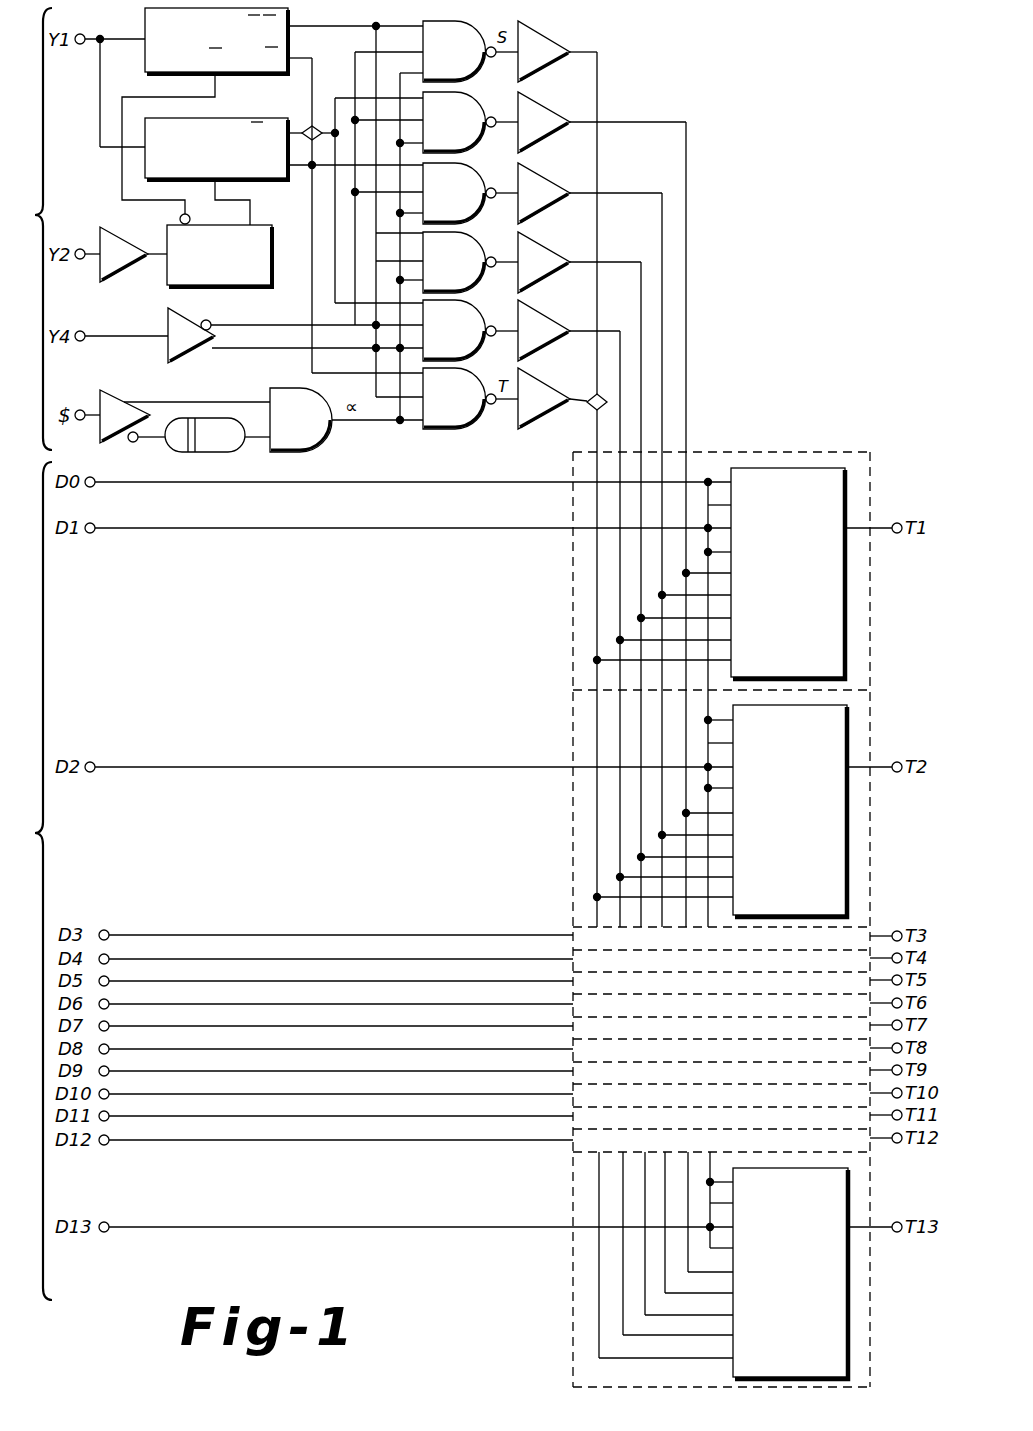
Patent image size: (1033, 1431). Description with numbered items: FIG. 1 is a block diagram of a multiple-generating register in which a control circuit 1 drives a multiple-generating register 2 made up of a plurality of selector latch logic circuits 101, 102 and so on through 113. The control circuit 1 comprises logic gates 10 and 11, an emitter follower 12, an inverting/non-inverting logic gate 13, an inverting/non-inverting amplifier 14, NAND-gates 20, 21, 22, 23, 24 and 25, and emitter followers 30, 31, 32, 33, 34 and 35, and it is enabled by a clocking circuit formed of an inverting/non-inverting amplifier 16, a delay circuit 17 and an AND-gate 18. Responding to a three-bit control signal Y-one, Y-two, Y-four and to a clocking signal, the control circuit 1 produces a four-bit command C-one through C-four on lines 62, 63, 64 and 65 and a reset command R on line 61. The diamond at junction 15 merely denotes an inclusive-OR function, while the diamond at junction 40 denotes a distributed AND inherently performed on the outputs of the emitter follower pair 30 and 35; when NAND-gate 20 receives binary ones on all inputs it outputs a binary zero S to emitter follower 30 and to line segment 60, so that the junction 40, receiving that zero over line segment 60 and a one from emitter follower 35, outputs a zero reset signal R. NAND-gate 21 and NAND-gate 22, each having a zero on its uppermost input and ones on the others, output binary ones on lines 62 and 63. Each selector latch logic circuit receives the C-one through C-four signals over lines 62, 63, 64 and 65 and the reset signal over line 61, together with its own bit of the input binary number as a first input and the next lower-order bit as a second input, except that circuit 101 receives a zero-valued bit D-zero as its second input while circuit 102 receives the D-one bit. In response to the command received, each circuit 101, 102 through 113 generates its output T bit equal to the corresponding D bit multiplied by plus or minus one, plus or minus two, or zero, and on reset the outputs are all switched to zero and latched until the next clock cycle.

The control circuit 1 is at (33, 229).
The multiple-generating register 2 is at (33, 881).
The logic gate 10 is at (145, 14).
The logic gate 11 is at (218, 104).
The emitter follower 12 is at (118, 282).
The inverting/non-inverting logic gate 13 is at (244, 287).
The inverting/non-inverting amplifier 14 is at (185, 363).
The junction 15 is at (308, 128).
The inverting/non-inverting amplifier 16 is at (140, 390).
The delay circuit 17 is at (168, 448).
The AND-gate 18 is at (270, 386).
The NAND-gate 20 is at (478, 36).
The NAND-gate 21 is at (473, 104).
The NAND-gate 22 is at (473, 174).
The NAND-gate 23 is at (473, 243).
The NAND-gate 24 is at (473, 311).
The NAND-gate 25 is at (473, 379).
The emitter follower 30 is at (528, 20).
The emitter follower 31 is at (530, 104).
The emitter follower 32 is at (530, 174).
The emitter follower 33 is at (530, 243).
The emitter follower 34 is at (530, 311).
The emitter follower 35 is at (530, 379).
The junction 40 is at (592, 408).
The line segment 60 is at (600, 102).
The line 61 is at (597, 436).
The line 62 is at (686, 167).
The line 63 is at (660, 226).
The line 64 is at (640, 298).
The line 65 is at (629, 330).
The selector latch logic circuit 101 is at (804, 507).
The selector latch logic circuit 102 is at (806, 739).
The selector latch logic circuit 113 is at (806, 1201).